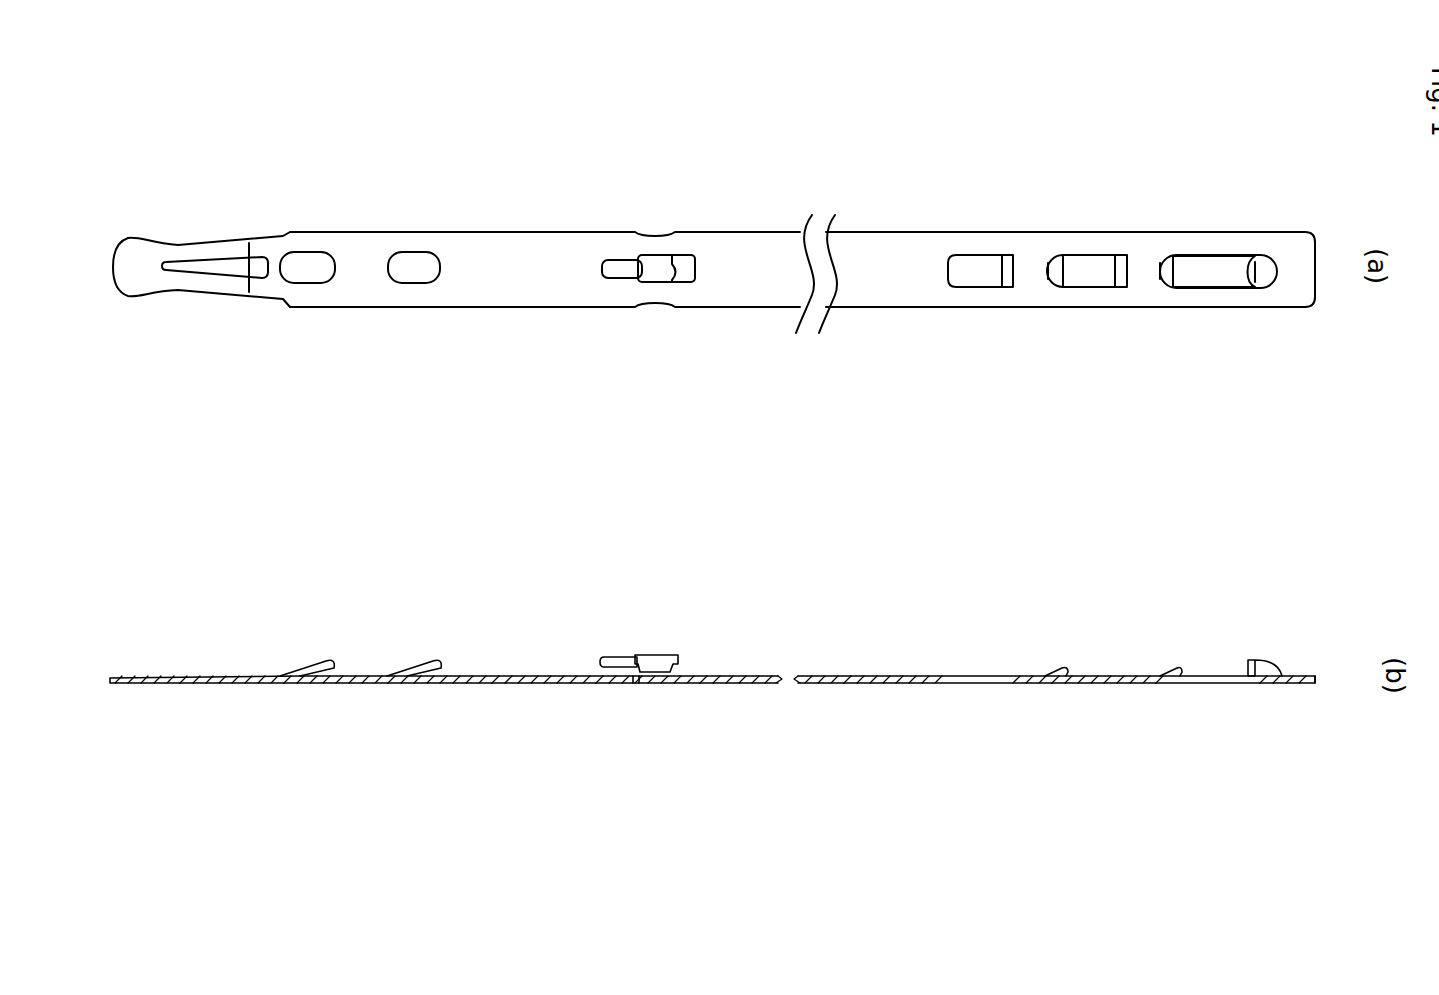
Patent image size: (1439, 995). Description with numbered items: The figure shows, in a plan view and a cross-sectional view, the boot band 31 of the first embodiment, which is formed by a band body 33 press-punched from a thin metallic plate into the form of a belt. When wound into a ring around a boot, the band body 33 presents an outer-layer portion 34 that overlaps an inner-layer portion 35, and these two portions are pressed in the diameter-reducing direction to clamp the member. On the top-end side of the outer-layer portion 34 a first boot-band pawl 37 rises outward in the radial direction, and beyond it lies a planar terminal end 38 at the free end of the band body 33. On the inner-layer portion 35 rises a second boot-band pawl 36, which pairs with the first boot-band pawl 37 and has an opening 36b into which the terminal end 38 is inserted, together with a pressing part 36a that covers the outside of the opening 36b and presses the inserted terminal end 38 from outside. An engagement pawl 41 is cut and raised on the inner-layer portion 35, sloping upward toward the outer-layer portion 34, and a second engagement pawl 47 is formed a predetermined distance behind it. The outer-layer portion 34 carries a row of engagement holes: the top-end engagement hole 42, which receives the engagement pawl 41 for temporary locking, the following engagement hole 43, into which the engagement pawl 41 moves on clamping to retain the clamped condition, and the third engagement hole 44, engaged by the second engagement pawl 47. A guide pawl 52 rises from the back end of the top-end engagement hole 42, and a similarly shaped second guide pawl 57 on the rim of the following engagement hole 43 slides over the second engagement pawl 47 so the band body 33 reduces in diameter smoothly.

The boot band 31 is at (585, 147).
The band body 33 is at (634, 192).
The outer-layer portion 34 is at (974, 212).
The inner-layer portion 35 is at (357, 215).
The second boot-band pawl 36 is at (680, 275).
The pressing part 36a is at (620, 270).
The opening 36b is at (628, 685).
The first boot-band pawl 37 is at (1265, 275).
The terminal end 38 is at (1307, 278).
The engagement pawl 41 is at (420, 268).
The top-end engagement hole 42 is at (1212, 278).
The following engagement hole 43 is at (1095, 272).
The third engagement hole 44 is at (980, 275).
The second engagement pawl 47 is at (312, 268).
The guide pawl 52 is at (1170, 272).
The second guide pawl 57 is at (1058, 272).